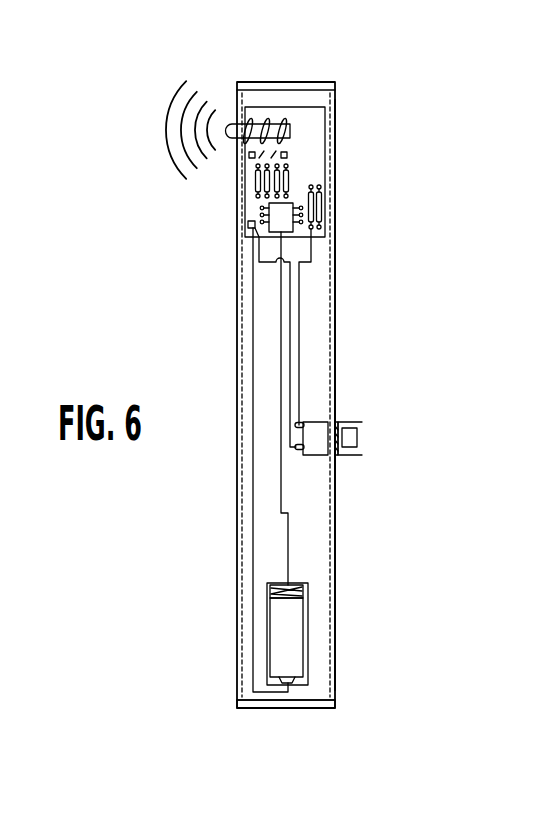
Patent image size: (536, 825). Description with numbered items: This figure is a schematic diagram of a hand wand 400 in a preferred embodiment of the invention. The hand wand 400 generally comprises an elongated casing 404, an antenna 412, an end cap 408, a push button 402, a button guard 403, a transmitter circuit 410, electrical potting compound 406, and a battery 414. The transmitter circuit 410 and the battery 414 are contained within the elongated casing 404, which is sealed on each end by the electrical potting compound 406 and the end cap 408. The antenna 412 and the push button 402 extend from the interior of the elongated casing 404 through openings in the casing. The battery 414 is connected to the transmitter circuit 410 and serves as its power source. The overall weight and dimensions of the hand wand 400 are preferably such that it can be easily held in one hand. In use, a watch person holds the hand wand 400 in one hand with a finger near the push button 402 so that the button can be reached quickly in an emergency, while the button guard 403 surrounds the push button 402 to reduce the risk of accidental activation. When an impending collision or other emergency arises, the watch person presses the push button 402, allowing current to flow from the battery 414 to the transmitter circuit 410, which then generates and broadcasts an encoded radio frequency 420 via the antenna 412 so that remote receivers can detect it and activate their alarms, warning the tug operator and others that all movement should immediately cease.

The hand wand 400 is at (364, 278).
The push button 402 is at (347, 442).
The button guard 403 is at (353, 420).
The elongated casing 404 is at (335, 315).
The electrical potting compound 406 is at (287, 82).
The end cap 408 is at (312, 708).
The transmitter circuit 410 is at (304, 150).
The antenna 412 is at (229, 121).
The battery 414 is at (285, 632).
The encoded radio frequency 420 is at (166, 137).